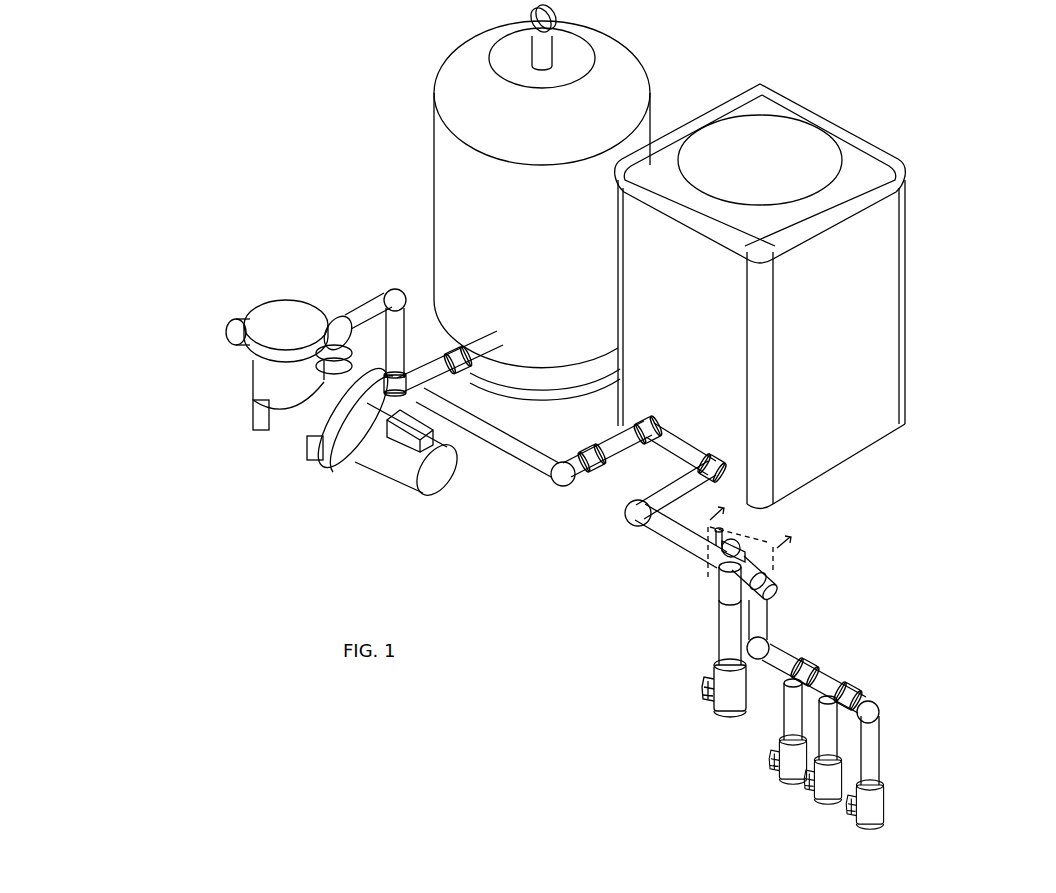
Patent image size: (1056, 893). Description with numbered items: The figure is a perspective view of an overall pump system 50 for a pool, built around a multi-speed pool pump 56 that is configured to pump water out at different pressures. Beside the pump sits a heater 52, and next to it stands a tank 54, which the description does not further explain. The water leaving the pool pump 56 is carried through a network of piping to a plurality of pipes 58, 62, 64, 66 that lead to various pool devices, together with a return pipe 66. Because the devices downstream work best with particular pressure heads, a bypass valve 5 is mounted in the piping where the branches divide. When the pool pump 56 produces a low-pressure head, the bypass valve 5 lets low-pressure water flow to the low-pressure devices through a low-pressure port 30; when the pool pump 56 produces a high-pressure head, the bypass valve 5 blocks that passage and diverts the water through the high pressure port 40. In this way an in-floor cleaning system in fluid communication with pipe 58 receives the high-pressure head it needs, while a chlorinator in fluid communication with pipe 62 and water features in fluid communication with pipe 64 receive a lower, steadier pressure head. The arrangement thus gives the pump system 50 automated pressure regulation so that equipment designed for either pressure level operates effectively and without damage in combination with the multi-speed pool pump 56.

The pump system 50 is at (945, 117).
The heater 52 is at (858, 232).
The resin tank 54 is at (477, 110).
The pool pump 56 is at (303, 403).
The bypass valve 5 is at (772, 548).
The low-pressure port 30 is at (772, 596).
The high pressure port 40 is at (718, 590).
The pipe 58 is at (716, 673).
The pipe 62 is at (793, 718).
The pipe 64 is at (828, 742).
The return pipe 66 is at (876, 753).